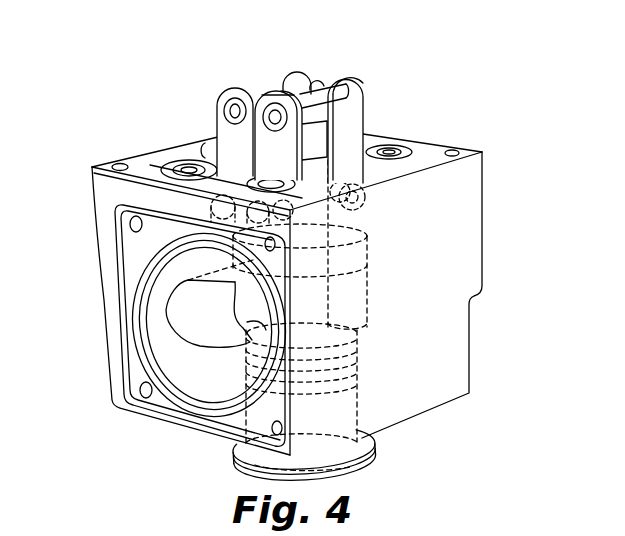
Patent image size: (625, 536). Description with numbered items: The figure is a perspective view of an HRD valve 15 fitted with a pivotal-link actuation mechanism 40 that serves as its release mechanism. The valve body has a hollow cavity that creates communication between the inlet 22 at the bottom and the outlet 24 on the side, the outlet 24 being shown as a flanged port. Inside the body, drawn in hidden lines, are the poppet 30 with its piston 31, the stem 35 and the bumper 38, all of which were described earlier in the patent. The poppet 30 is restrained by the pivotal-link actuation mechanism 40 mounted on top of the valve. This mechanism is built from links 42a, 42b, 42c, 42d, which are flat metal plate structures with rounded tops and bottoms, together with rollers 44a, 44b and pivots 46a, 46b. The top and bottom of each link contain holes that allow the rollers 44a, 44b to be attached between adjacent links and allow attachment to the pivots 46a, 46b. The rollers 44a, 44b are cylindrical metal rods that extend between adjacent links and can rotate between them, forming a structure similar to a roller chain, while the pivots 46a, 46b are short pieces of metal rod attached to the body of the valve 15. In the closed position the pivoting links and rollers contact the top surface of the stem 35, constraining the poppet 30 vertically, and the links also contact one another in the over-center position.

The HRD valve 15 is at (513, 157).
The inlet 22 is at (370, 457).
The outlet 24 is at (170, 357).
The poppet 30 is at (355, 298).
The piston 31 is at (362, 363).
The stem 35 is at (316, 138).
The bumper 38 is at (362, 232).
The pivotal-link actuation mechanism 40 is at (220, 68).
The link 42a is at (217, 91).
The link 42b is at (272, 141).
The link 42c is at (312, 80).
The link 42d is at (364, 100).
The roller 44a is at (259, 91).
The roller 44b is at (314, 82).
The pivot 46a is at (212, 210).
The pivot 46b is at (240, 228).